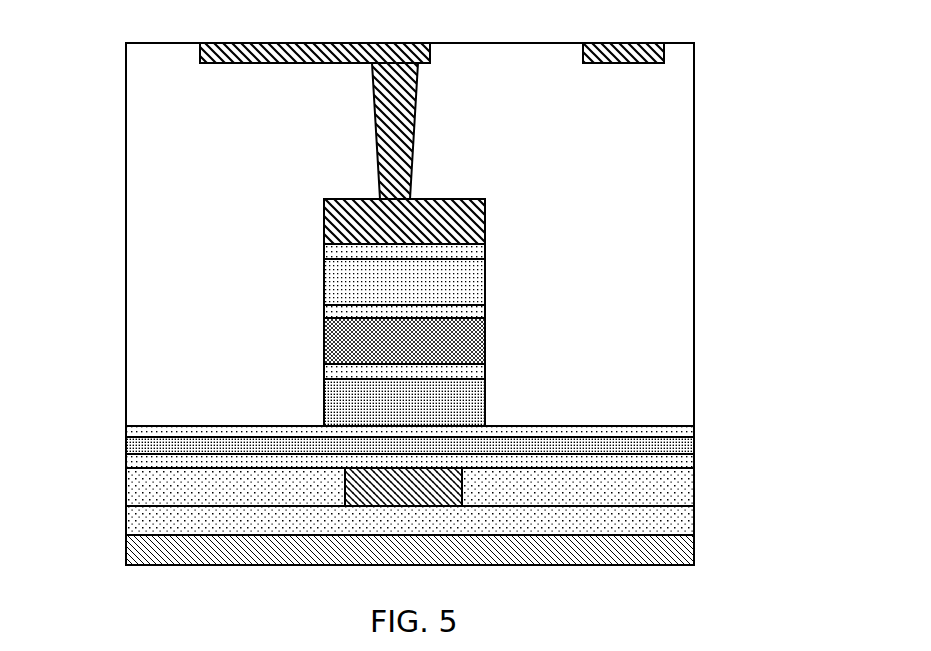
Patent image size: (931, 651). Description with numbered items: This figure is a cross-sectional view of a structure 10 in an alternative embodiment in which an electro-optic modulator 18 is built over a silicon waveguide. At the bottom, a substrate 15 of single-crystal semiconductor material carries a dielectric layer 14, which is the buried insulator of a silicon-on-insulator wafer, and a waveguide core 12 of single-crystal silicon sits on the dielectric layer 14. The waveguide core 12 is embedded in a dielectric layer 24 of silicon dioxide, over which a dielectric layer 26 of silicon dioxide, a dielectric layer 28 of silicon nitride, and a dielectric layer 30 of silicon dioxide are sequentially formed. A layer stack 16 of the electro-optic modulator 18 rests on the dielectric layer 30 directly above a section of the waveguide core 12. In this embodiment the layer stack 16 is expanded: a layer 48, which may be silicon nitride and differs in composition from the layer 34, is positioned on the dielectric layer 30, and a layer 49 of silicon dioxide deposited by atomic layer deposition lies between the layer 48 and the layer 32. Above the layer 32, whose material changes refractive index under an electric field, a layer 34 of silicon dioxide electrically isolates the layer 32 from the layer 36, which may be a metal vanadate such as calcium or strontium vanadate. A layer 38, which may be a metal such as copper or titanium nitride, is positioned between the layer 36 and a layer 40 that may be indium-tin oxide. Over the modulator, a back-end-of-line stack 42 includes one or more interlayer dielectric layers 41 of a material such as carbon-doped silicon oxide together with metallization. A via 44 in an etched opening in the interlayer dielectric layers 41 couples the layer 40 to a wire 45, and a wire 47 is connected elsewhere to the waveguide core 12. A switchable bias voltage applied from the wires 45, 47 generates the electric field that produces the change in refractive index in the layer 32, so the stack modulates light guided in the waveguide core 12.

The structure 10 is at (104, 170).
The waveguide core 12 is at (365, 477).
The dielectric layer 14 is at (675, 527).
The substrate 15 is at (675, 553).
The layer stack 16 is at (497, 279).
The electro-optic modulator 18 is at (528, 203).
The dielectric layer 24 is at (672, 480).
The dielectric layer 26 is at (165, 462).
The dielectric layer 28 is at (678, 448).
The dielectric layer 30 is at (165, 432).
The layer 32 is at (345, 340).
The layer 34 is at (487, 314).
The layer 36 is at (340, 276).
The layer 38 is at (487, 252).
The layer 40 is at (345, 222).
The interlayer dielectric layers 41 is at (678, 313).
The back-end-of-line stack 42 is at (703, 199).
The via 44 is at (411, 104).
The wire 45 is at (428, 53).
The wire 47 is at (584, 53).
The layer 48 is at (345, 405).
The layer 49 is at (487, 373).